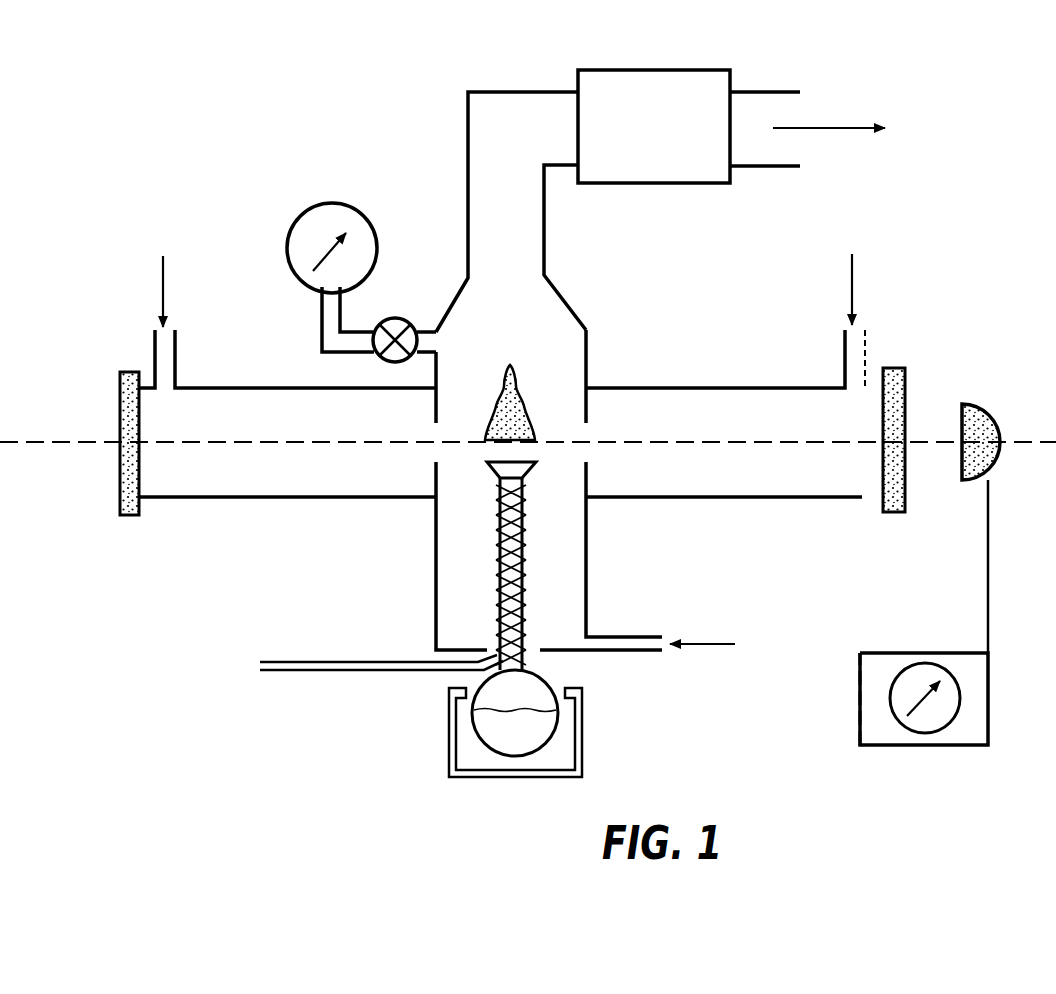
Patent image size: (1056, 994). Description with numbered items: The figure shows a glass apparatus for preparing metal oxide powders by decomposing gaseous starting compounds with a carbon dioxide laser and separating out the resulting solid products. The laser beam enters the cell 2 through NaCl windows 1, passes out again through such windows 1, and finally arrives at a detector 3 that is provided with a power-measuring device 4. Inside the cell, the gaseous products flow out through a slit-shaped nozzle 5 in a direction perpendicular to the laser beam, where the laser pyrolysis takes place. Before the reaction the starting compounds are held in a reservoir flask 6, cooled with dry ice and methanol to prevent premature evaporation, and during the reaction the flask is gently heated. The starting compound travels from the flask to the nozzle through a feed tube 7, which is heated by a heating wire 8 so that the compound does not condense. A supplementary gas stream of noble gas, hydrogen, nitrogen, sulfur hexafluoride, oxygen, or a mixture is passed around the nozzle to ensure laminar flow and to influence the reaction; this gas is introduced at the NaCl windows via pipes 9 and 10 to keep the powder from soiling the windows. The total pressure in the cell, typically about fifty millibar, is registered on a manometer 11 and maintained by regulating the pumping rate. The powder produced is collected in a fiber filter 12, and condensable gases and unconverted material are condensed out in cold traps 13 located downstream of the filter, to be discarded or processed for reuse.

The NaCl windows 1 is at (120, 477).
The cell 2 is at (295, 487).
The detector 3 is at (980, 410).
The power-measuring device 4 is at (980, 700).
The slit-shaped nozzle 5 is at (500, 474).
The reservoir flask 6 is at (478, 720).
The feed tube 7 is at (512, 580).
The heating wire 8 is at (345, 660).
The pipe 9 is at (856, 272).
The pipe 10 is at (161, 278).
The manometer 11 is at (355, 216).
The fiber filter 12 is at (689, 126).
The cold traps 13 is at (838, 128).